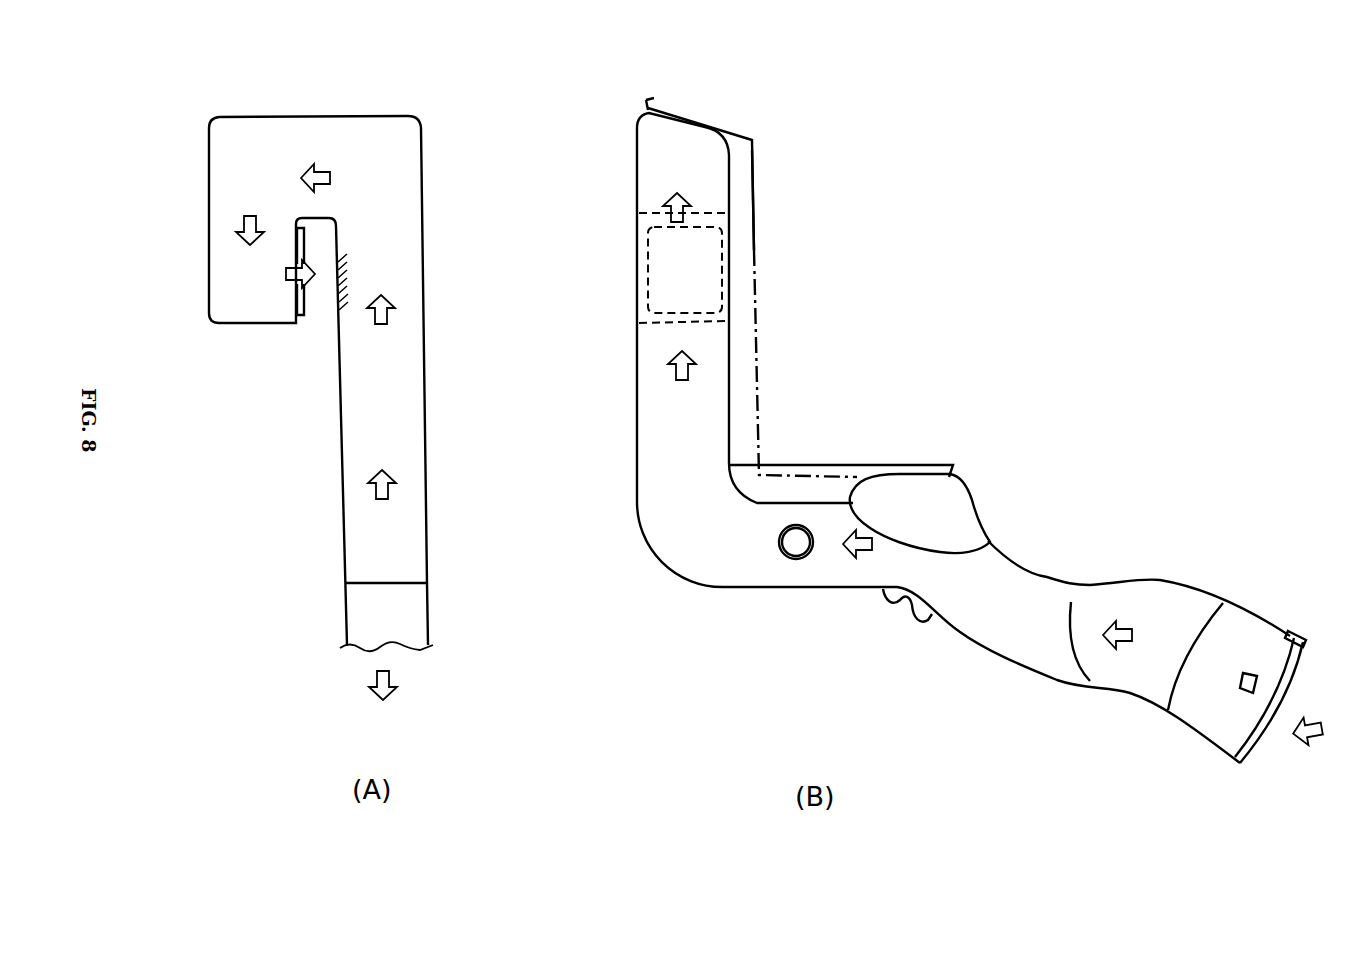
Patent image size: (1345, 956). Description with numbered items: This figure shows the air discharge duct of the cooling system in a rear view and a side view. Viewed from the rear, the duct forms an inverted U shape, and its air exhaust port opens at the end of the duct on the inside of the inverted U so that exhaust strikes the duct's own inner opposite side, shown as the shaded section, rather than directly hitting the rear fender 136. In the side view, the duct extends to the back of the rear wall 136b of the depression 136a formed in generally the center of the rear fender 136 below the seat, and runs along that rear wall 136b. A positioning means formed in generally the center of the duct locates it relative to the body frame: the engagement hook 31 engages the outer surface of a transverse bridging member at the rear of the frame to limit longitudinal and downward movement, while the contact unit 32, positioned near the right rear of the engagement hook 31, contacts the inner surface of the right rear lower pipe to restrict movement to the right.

The rear fender 136 is at (678, 112).
The depression 136a is at (913, 374).
The rear wall 136b is at (758, 330).
The contact unit 32 is at (791, 550).
The engagement hook 31 is at (929, 626).